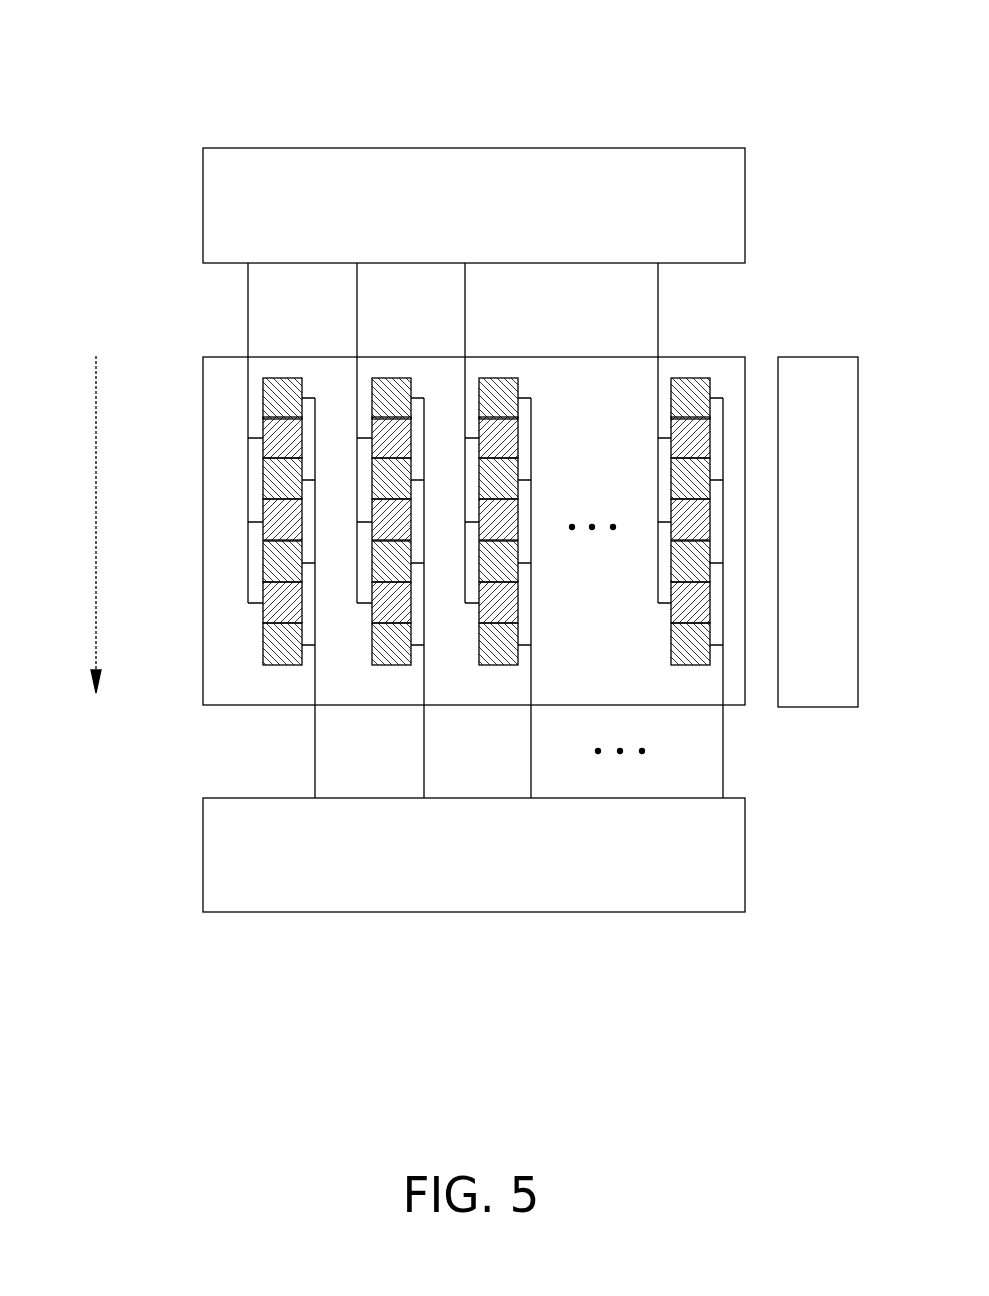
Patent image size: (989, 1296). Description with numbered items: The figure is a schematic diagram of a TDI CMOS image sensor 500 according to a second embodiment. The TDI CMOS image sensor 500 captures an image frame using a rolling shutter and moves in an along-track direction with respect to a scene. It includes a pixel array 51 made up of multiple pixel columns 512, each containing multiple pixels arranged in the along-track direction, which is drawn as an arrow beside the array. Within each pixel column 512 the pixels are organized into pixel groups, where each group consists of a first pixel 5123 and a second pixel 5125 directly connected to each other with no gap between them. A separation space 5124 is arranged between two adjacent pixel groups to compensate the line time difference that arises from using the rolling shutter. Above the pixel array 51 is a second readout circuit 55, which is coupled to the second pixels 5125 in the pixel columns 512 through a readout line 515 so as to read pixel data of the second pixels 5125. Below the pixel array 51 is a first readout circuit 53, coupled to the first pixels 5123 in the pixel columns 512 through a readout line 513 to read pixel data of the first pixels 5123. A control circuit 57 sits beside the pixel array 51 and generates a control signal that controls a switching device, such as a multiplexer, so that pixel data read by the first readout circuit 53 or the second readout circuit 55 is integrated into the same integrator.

The TDI CMOS image sensor 500 is at (125, 36).
The pixel array 51 is at (203, 357).
The pixel column 512 is at (420, 479).
The readout line 513 is at (315, 747).
The readout line 515 is at (658, 308).
The first pixel 5123 is at (263, 398).
The separation space 5124 is at (263, 459).
The second pixel 5125 is at (263, 431).
The first readout circuit 53 is at (658, 912).
The second readout circuit 55 is at (680, 148).
The control circuit 57 is at (822, 357).